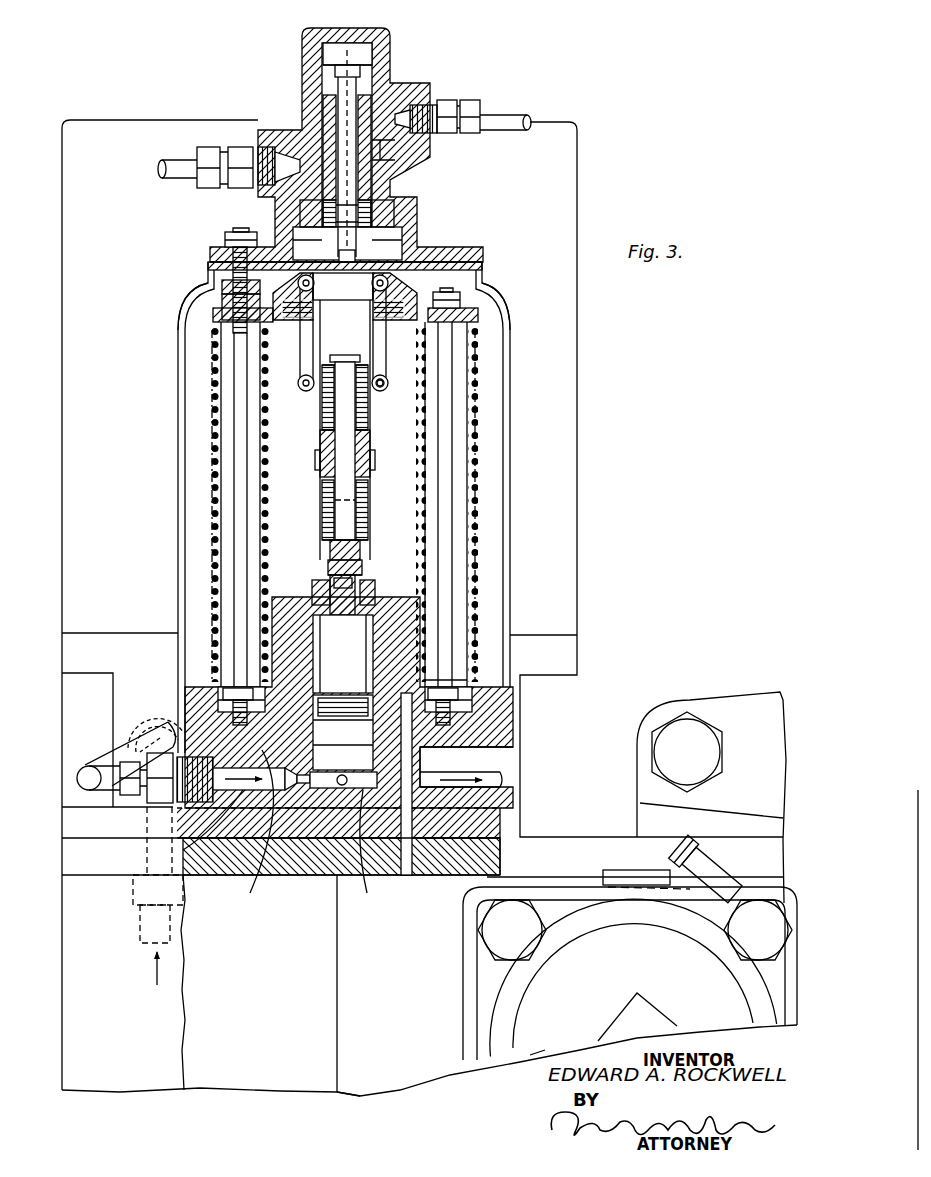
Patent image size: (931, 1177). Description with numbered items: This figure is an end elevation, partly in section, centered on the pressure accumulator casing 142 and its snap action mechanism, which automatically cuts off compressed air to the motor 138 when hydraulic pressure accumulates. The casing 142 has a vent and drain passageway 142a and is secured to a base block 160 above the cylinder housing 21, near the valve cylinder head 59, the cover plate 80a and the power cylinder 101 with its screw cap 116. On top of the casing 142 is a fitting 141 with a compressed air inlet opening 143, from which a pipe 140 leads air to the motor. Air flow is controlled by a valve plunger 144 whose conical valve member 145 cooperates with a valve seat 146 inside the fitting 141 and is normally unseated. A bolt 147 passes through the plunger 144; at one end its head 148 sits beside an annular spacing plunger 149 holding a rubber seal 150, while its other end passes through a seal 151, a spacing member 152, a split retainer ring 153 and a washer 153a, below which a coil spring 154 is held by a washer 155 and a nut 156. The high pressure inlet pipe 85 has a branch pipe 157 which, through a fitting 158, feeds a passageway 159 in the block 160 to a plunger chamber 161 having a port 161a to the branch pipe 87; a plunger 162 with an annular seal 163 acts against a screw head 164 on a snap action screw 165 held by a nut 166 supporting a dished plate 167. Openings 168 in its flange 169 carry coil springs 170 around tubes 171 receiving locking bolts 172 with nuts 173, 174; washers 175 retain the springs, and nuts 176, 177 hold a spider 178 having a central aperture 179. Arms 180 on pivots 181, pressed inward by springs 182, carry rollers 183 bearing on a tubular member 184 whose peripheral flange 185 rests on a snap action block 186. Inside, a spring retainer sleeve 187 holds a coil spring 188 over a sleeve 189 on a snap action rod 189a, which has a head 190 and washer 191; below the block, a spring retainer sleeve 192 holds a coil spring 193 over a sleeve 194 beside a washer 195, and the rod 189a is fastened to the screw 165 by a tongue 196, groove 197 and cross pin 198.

The motor 138 is at (580, 462).
The fitting 141 is at (394, 40).
The bolt 147 is at (395, 180).
The washer 155 is at (320, 245).
The valve seat 146 is at (326, 135).
The split retainer ring 153 is at (372, 212).
The washer 153a is at (385, 187).
The spacing member 152 is at (396, 202).
The coil spring 154 is at (402, 236).
The annular spacing plunger 149 is at (370, 80).
The head 148 is at (344, 55).
The nut 156 is at (339, 256).
The central aperture 179 is at (420, 252).
The seal 151 is at (300, 190).
The compressed air inlet opening 143 is at (306, 160).
The rubber seal 150 is at (430, 90).
The pipe 140 is at (522, 114).
The conical valve member 145 is at (392, 142).
The valve plunger 144 is at (385, 165).
The pressure accumulator casing 142 is at (178, 470).
The pivots 181 is at (210, 266).
The spider 178 is at (486, 284).
The nut 177 is at (222, 287).
The nut 176 is at (222, 315).
The nut 174 is at (225, 241).
The washers 175 is at (212, 322).
The springs 182 is at (292, 325).
The pivoted arms 180 is at (303, 375).
The washer 191 is at (381, 391).
The head 190 is at (345, 355).
The sleeve 189 is at (372, 418).
The spring retainer sleeve 187 is at (322, 420).
The coil spring 188 is at (322, 435).
The tubular member 184 is at (372, 436).
The snap action block 186 is at (318, 458).
The peripheral flange 185 is at (375, 462).
The rollers 183 is at (308, 392).
The snap action rod 189a is at (365, 510).
The sleeve 194 is at (322, 500).
The spring retainer sleeve 192 is at (322, 512).
The coil spring 193 is at (322, 530).
The washer 195 is at (330, 550).
The tongue 196 is at (328, 566).
The cross pin 198 is at (362, 565).
The snap action screw 165 is at (353, 592).
The groove 197 is at (332, 580).
The nut 166 is at (375, 590).
The nut 173 is at (345, 736).
The screw head 164 is at (333, 678).
The plunger 162 is at (343, 732).
The flange 169 is at (212, 684).
The dished plate 167 is at (262, 592).
The openings 168 is at (220, 692).
The branch pipe 157 is at (98, 768).
The fitting 158 is at (152, 803).
The annular seal 163 is at (293, 797).
The port 161a is at (343, 779).
The vent and drain passageway 142a is at (426, 758).
The branch high pressure hydraulic liquid inlet pipe 87 is at (502, 779).
The base block 160 is at (248, 870).
The plunger chamber 161 is at (360, 860).
The passageway 159 is at (183, 848).
The high pressure hydraulic liquid inlet pipe 85 is at (133, 904).
The tubes 171 is at (212, 612).
The locking bolts 172 is at (240, 546).
The coil springs 170 is at (480, 668).
The valve cylinder head 59 is at (753, 700).
The cover plate 80a is at (548, 860).
The power cylinder 101 is at (486, 1030).
The screw cap 116 is at (547, 1056).
The cylinder housing 21 is at (361, 1097).